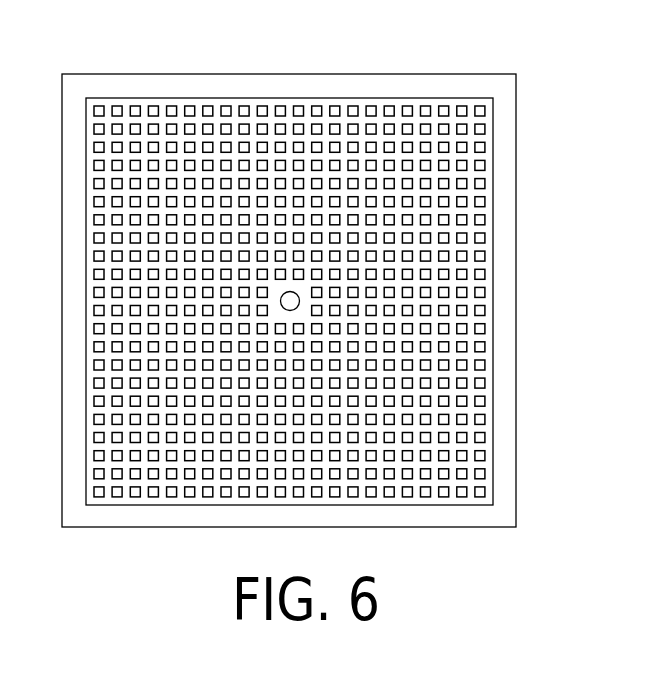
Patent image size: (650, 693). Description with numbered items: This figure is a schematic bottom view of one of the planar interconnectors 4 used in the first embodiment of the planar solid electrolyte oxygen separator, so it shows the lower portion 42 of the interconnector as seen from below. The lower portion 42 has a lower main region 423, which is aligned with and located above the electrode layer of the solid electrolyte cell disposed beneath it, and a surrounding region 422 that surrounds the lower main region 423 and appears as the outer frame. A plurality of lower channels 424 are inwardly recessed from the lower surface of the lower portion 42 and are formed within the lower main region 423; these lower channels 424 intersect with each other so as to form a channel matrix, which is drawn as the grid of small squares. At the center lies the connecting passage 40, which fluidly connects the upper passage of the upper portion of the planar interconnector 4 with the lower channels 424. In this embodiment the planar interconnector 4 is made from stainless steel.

The planar interconnector 4 is at (541, 117).
The connecting passage 40 is at (299, 304).
The lower portion 42 is at (487, 173).
The surrounding region 422 is at (453, 83).
The lower main region 423 is at (265, 135).
The lower channels 424 is at (327, 128).